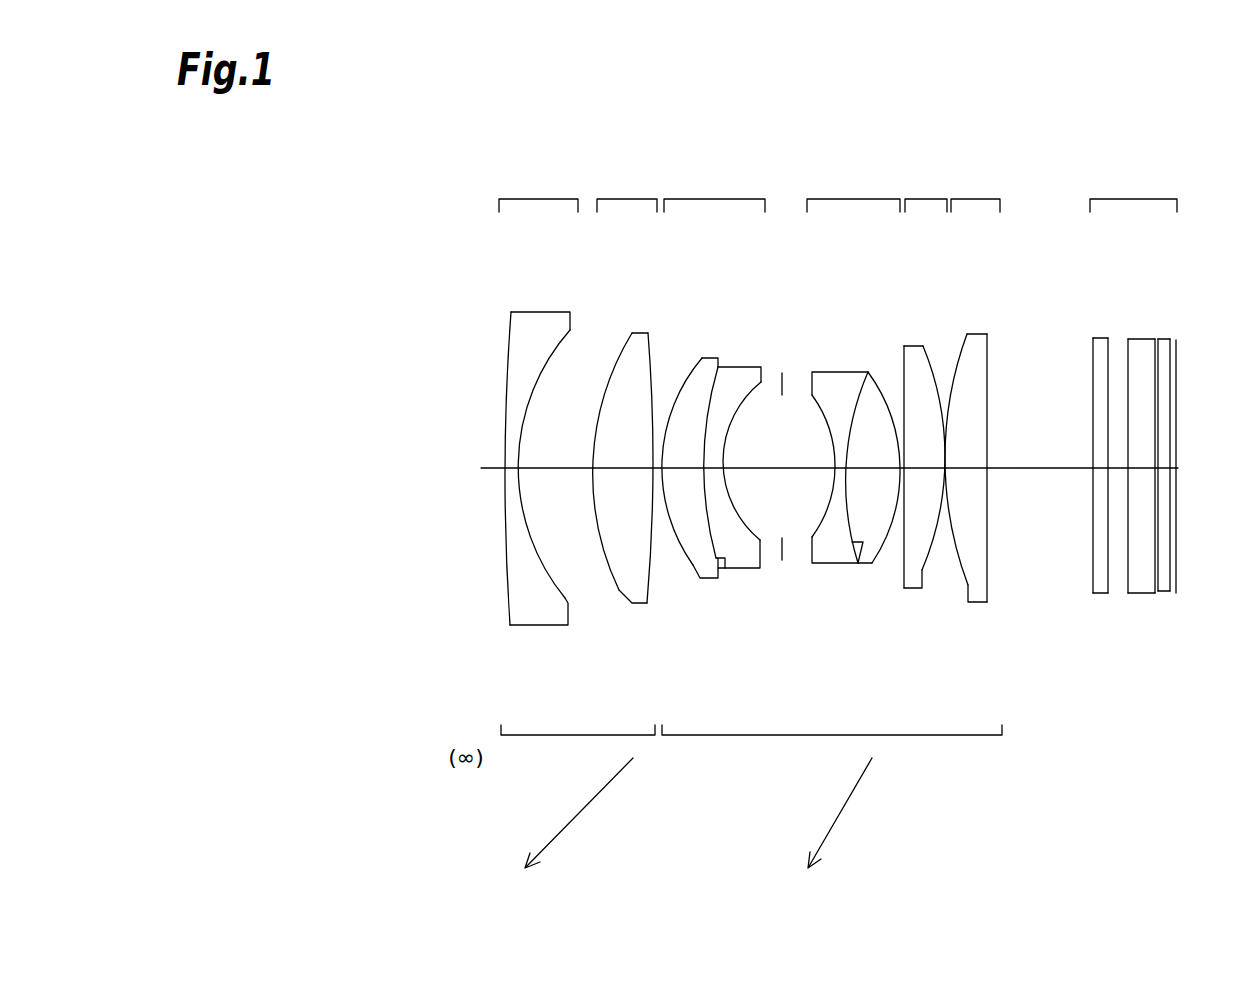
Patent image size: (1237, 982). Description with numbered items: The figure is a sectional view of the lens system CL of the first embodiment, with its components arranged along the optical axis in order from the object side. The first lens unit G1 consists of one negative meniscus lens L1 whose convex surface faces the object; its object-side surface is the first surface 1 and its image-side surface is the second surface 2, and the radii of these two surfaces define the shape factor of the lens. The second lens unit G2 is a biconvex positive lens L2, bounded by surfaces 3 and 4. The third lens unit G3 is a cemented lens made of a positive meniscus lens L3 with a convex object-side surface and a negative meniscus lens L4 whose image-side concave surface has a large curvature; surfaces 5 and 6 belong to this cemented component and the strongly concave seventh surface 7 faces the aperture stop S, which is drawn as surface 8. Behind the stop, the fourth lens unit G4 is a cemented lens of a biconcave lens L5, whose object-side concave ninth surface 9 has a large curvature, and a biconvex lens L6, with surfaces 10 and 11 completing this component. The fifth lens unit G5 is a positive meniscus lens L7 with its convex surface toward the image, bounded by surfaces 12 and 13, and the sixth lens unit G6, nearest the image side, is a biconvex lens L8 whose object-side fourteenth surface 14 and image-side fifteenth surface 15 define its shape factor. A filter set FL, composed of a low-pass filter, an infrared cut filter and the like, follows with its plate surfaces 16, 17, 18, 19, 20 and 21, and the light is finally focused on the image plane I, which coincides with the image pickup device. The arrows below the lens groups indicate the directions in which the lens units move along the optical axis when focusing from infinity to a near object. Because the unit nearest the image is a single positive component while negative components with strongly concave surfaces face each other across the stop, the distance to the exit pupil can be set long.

The first surface 1 is at (509, 618).
The second surface 2 is at (565, 603).
The object-side surface of lens L2 3 is at (625, 590).
The image-side surface of lens L2 4 is at (647, 590).
The object-side surface of lens L3 5 is at (693, 567).
The cemented surface between L3 and L4 6 is at (722, 569).
The seventh surface 7 is at (761, 541).
The aperture stop S surface 8 is at (782, 561).
The ninth surface 9 is at (809, 538).
The cemented surface between L5 and L6 10 is at (857, 564).
The image-side surface of lens L6 11 is at (886, 548).
The object-side surface of lens L7 12 is at (904, 585).
The image-side surface of lens L7 13 is at (930, 571).
The fourteenth surface 14 is at (961, 585).
The fifteenth surface 15 is at (988, 584).
The object-side surface of first filter plate 16 is at (1094, 585).
The image-side surface of first filter plate 17 is at (1109, 585).
The object-side surface of second filter plate 18 is at (1128, 584).
The image-side surface of second filter plate 19 is at (1157, 585).
The object-side surface of third filter plate 20 is at (1157, 584).
The image-side surface of third filter plate 21 is at (1170, 585).
The negative meniscus lens L1 is at (544, 312).
The biconvex positive lens L2 is at (633, 333).
The positive meniscus lens L3 is at (707, 357).
The negative meniscus lens L4 is at (738, 366).
The biconcave lens L5 is at (835, 371).
The biconvex lens L6 is at (868, 371).
The positive meniscus lens L7 is at (912, 345).
The biconvex lens L8 is at (977, 334).
The aperture stop S is at (782, 373).
The image plane I is at (1176, 352).
The first lens unit G1 is at (532, 434).
The second lens unit G2 is at (625, 420).
The third lens unit G3 is at (714, 420).
The fourth lens unit G4 is at (850, 420).
The fifth lens unit G5 is at (922, 420).
The sixth lens unit G6 is at (978, 420).
The filter set FL is at (1131, 431).
The lens system CL is at (1057, 121).